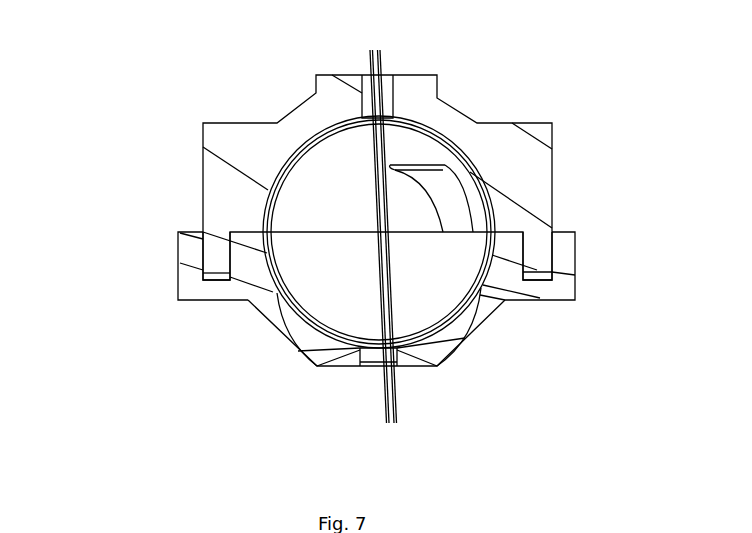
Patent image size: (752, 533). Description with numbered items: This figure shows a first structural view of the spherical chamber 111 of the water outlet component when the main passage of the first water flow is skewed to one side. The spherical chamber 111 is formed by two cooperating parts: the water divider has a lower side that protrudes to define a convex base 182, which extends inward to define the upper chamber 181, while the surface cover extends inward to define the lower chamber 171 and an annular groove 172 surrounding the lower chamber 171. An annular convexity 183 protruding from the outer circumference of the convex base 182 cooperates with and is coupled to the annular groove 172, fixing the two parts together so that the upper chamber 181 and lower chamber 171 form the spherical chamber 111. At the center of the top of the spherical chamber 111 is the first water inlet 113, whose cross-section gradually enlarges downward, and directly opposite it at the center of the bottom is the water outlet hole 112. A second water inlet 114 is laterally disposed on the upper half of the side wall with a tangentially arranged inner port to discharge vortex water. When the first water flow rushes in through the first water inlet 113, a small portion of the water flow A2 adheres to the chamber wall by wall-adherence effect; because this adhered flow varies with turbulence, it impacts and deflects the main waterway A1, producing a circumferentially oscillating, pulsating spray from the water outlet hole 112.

The spherical chamber 111 is at (280, 165).
The water outlet hole 112 is at (373, 353).
The first water inlet 113 is at (383, 92).
The second water inlet 114 is at (443, 205).
The lower chamber 171 is at (340, 300).
The annular groove 172 is at (552, 257).
The upper chamber 181 is at (337, 158).
The convex base 182 is at (222, 185).
The annular convexity 183 is at (217, 250).
The main waterway A1 is at (388, 275).
The water flow A2 is at (280, 297).